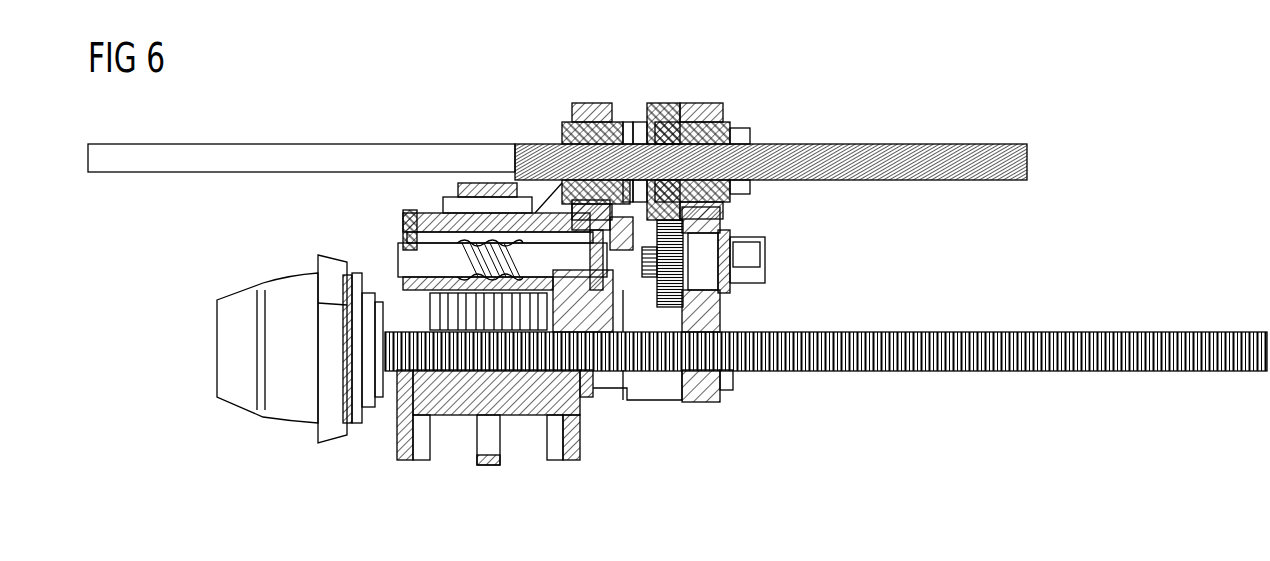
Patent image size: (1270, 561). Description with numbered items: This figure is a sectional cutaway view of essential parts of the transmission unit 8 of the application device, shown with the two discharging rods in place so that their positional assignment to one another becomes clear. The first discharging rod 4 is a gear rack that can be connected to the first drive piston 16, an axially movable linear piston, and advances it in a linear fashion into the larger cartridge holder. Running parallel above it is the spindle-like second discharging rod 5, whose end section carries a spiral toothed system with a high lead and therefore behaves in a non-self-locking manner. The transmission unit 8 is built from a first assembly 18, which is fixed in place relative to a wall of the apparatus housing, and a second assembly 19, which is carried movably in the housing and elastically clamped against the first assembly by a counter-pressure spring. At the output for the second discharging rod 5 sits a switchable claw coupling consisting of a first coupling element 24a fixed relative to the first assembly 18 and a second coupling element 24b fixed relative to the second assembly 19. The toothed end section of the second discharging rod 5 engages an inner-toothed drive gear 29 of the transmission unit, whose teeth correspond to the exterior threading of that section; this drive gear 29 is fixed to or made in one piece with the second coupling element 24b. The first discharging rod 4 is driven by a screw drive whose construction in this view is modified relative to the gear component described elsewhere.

The first discharging rod (gear rack) 4 is at (950, 374).
The second discharging rod 5 is at (313, 158).
The transmission unit 8 is at (840, 95).
The first drive piston (linear piston) 16 is at (228, 348).
The first assembly 18 is at (790, 298).
The second assembly 19 is at (350, 217).
The first coupling element 24a is at (631, 120).
The second coupling element 24b is at (648, 110).
The inner-toothed drive gear 29 is at (558, 132).